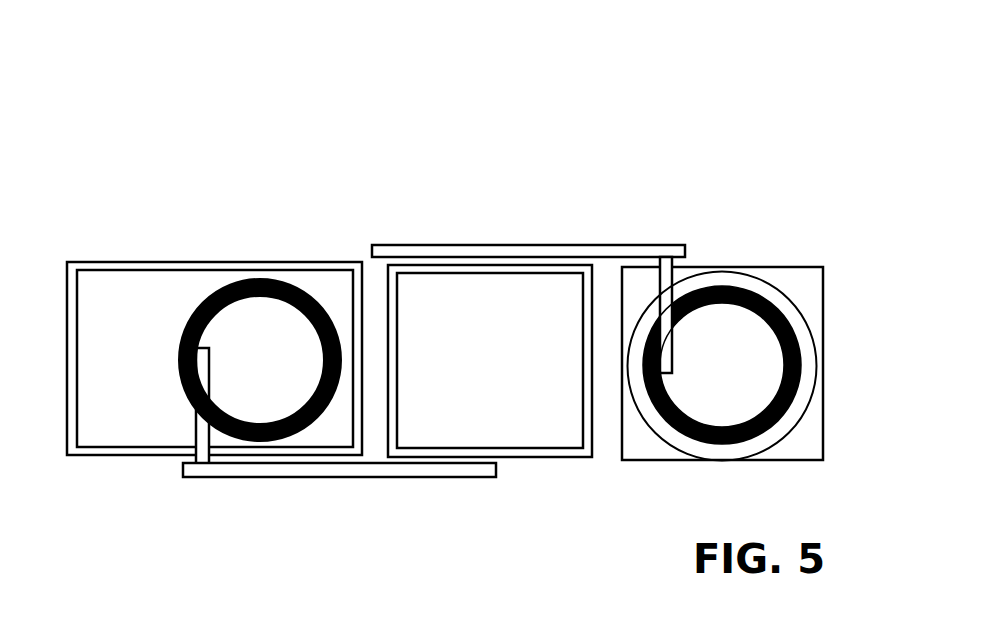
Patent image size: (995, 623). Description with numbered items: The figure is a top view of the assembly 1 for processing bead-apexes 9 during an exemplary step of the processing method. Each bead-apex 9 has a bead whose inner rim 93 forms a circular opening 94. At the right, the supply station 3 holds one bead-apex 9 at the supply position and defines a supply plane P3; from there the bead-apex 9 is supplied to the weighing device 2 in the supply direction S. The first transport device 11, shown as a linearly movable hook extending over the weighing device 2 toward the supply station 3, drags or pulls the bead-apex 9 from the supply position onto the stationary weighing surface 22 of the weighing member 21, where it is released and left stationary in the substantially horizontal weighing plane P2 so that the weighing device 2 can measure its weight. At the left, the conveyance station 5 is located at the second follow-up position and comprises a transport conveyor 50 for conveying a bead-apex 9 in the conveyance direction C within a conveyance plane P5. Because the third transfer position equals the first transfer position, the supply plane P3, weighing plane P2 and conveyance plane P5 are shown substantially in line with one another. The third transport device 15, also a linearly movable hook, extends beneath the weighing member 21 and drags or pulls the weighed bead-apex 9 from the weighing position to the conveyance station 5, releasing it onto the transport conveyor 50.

The assembly 1 is at (128, 97).
The weighing device 2 is at (467, 508).
The supply station 3 is at (683, 440).
The conveyance station 5 is at (210, 502).
The bead-apex 9 is at (277, 282).
The first transport device 11 is at (525, 246).
The third transport device 15 is at (315, 467).
The weighing member 21 is at (407, 443).
The weighing surface 22 is at (557, 443).
The transport conveyor 50 is at (163, 448).
The inner rim 93 is at (785, 373).
The circular opening 94 is at (753, 398).
The weighing plane P2 is at (423, 262).
The supply plane P3 is at (707, 267).
The conveyance plane P5 is at (120, 261).
The conveyance direction C is at (178, 195).
The supply direction S is at (604, 200).